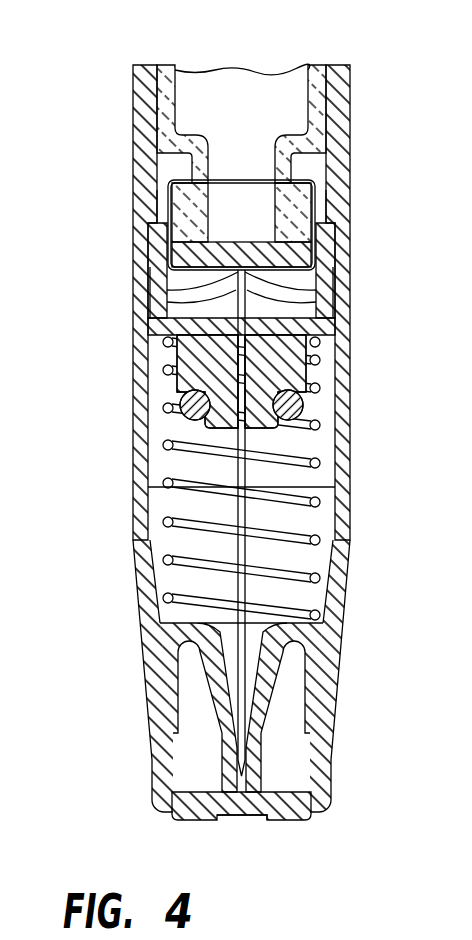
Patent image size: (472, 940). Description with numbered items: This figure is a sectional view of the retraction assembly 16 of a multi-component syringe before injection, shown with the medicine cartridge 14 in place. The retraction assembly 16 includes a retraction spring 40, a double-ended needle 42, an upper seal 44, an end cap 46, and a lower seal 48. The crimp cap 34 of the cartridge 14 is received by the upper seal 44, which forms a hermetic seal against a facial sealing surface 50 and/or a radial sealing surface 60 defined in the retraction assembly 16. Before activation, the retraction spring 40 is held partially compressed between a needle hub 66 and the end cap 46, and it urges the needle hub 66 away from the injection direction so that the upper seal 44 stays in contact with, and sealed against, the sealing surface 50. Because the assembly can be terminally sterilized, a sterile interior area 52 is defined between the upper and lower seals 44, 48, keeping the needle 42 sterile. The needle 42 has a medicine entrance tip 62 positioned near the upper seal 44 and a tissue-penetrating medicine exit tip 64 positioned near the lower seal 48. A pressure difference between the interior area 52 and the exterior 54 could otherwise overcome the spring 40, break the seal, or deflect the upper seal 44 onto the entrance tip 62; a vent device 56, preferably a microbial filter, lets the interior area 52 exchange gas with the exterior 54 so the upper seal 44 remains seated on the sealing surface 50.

The medicine cartridge 14 is at (242, 96).
The retraction assembly 16 is at (130, 177).
The crimp cap 34 is at (310, 195).
The retraction spring 40 is at (303, 420).
The double-ended needle 42 is at (160, 299).
The upper seal 44 is at (330, 238).
The end cap 46 is at (312, 826).
The lower seal 48 is at (258, 820).
The facial sealing surface 50 is at (158, 197).
The interior area 52 is at (315, 523).
The exterior 54 is at (173, 180).
The vent device 56 is at (196, 808).
The radial sealing surface 60 is at (165, 238).
The medicine entrance tip 62 is at (318, 305).
The medicine exit tip 64 is at (238, 774).
The needle hub 66 is at (205, 357).